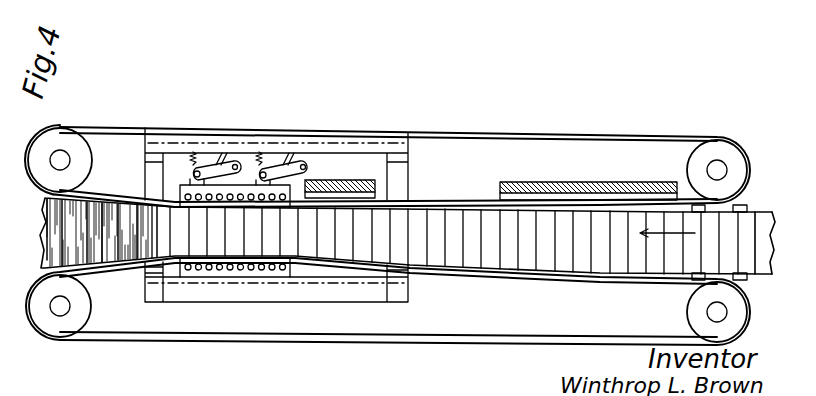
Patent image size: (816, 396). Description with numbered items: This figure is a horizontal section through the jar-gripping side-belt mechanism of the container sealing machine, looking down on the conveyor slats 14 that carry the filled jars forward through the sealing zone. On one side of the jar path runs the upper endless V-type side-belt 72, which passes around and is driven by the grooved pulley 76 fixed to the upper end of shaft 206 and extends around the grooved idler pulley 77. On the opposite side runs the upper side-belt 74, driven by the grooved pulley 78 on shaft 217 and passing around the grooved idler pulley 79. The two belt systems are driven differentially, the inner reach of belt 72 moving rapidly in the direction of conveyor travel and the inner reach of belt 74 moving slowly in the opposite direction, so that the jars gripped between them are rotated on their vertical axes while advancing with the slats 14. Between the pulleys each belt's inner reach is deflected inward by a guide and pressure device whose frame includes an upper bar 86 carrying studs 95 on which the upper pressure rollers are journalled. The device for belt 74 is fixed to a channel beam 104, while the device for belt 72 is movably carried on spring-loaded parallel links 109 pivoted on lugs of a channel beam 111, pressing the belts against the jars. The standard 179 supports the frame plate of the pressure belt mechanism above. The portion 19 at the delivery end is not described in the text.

The slats 14 is at (470, 223).
The finished product end 19 is at (752, 213).
The upper side-belt 72 is at (117, 128).
The upper side-belt 74 is at (110, 339).
The grooved pulley 76 is at (68, 142).
The grooved idler pulley 77 is at (707, 150).
The grooved pulley 78 is at (62, 323).
The grooved idler pulley 79 is at (697, 313).
The upper bar 86 is at (245, 188).
The studs 95 is at (218, 270).
The channel beam 104 is at (327, 295).
The parallel links 109 is at (222, 168).
The channel beam 111 is at (305, 141).
The standard 179 is at (350, 182).
The shaft 206 is at (58, 158).
The shaft 217 is at (55, 309).